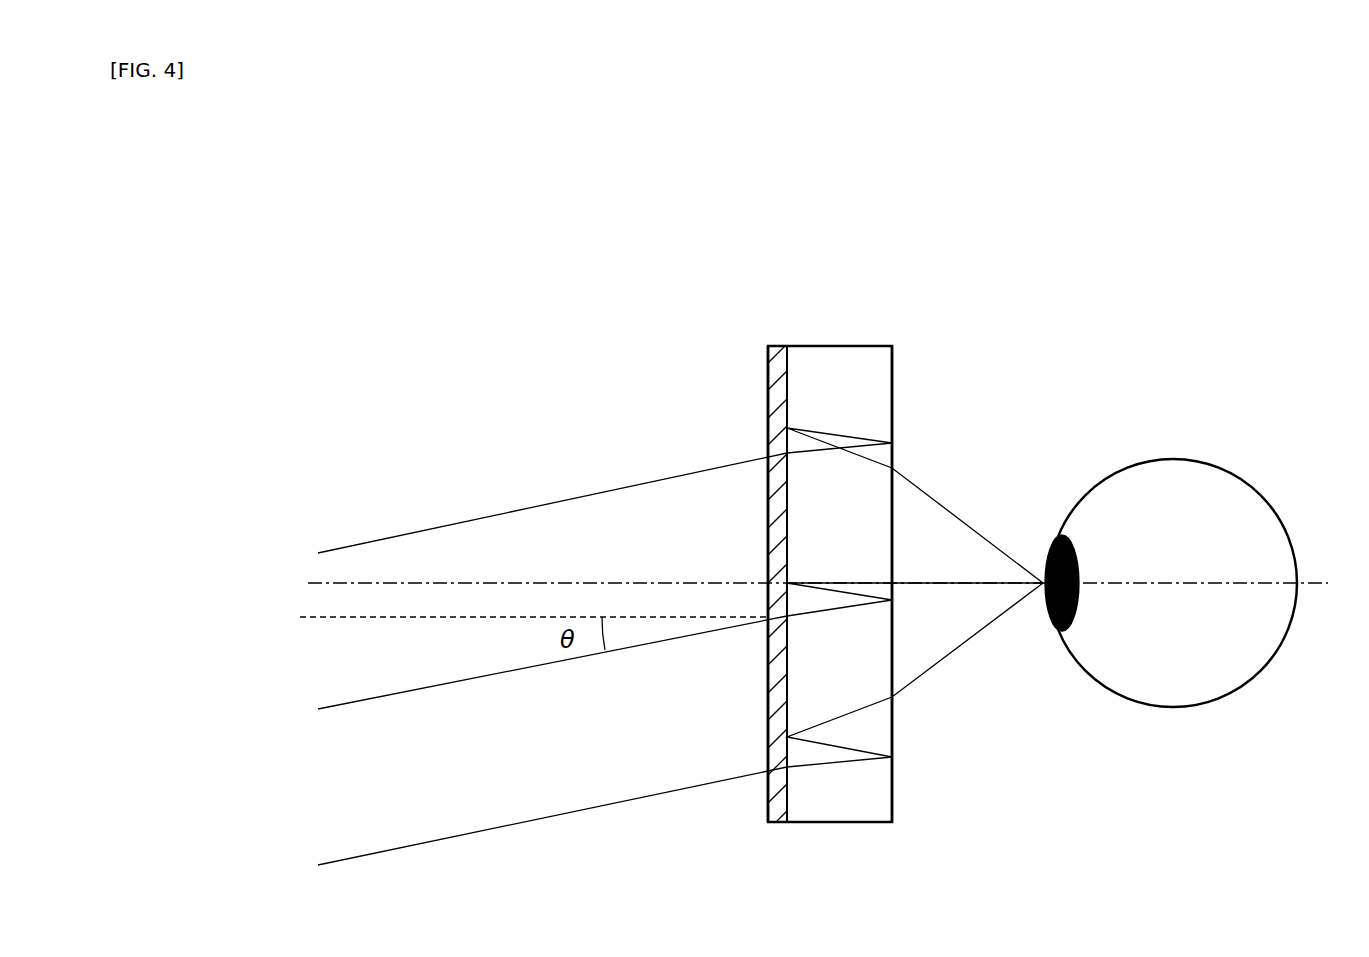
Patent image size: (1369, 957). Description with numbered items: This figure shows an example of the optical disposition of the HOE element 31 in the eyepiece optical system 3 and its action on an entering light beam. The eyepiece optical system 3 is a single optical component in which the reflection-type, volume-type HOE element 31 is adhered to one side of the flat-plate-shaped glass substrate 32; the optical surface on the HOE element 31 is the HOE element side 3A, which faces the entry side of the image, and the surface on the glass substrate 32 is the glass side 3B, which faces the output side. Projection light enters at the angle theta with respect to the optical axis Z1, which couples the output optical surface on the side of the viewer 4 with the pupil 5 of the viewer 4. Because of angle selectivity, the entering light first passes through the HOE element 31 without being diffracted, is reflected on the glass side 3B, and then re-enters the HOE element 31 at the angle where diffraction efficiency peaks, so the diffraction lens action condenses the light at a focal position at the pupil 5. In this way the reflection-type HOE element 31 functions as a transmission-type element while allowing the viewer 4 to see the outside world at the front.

The eyepiece optical system 3 is at (717, 548).
The HOE element 31 is at (771, 345).
The glass substrate 32 is at (845, 345).
The HOE element side 3A is at (768, 390).
The glass side 3B is at (893, 390).
The viewer 4 is at (1171, 458).
The pupil 5 is at (1053, 535).
The optical axis Z1 is at (838, 584).